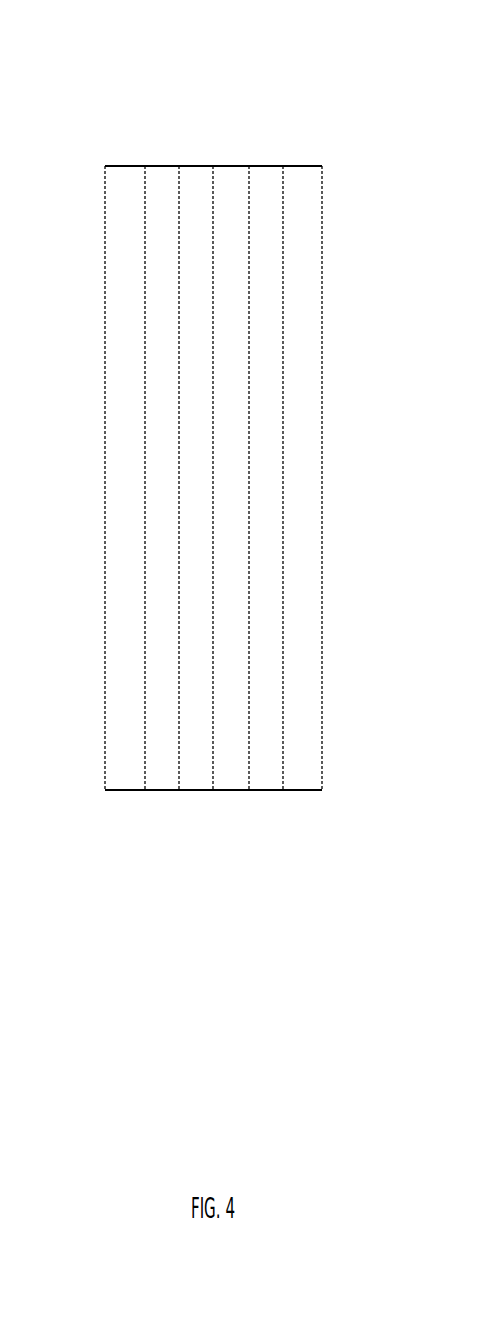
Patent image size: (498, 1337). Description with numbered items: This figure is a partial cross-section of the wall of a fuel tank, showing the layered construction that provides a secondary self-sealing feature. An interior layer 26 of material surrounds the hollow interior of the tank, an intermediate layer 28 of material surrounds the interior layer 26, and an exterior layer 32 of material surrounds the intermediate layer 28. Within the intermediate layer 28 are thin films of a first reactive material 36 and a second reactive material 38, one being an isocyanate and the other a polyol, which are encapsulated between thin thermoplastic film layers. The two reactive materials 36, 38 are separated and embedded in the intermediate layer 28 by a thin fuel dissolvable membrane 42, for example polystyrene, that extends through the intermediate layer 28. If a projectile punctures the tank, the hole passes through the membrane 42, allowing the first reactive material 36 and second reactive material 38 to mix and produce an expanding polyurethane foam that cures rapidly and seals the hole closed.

The interior layer 26 is at (113, 473).
The intermediate layer 28 is at (156, 183).
The exterior layer 32 is at (303, 473).
The first reactive material 36 is at (191, 180).
The second reactive material 38 is at (236, 183).
The fuel dissolvable membrane 42 is at (213, 220).